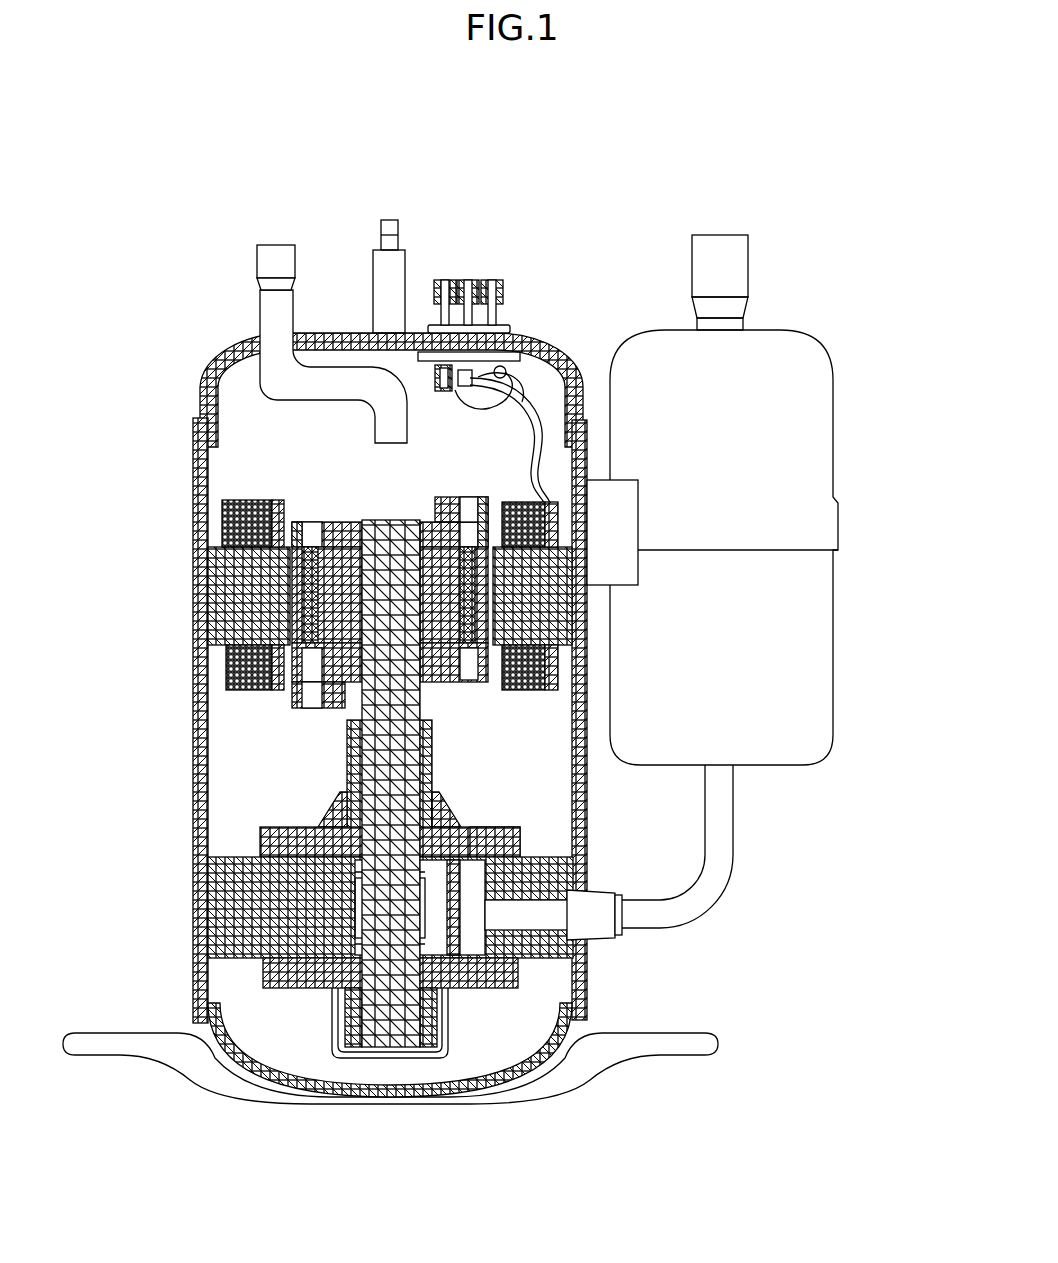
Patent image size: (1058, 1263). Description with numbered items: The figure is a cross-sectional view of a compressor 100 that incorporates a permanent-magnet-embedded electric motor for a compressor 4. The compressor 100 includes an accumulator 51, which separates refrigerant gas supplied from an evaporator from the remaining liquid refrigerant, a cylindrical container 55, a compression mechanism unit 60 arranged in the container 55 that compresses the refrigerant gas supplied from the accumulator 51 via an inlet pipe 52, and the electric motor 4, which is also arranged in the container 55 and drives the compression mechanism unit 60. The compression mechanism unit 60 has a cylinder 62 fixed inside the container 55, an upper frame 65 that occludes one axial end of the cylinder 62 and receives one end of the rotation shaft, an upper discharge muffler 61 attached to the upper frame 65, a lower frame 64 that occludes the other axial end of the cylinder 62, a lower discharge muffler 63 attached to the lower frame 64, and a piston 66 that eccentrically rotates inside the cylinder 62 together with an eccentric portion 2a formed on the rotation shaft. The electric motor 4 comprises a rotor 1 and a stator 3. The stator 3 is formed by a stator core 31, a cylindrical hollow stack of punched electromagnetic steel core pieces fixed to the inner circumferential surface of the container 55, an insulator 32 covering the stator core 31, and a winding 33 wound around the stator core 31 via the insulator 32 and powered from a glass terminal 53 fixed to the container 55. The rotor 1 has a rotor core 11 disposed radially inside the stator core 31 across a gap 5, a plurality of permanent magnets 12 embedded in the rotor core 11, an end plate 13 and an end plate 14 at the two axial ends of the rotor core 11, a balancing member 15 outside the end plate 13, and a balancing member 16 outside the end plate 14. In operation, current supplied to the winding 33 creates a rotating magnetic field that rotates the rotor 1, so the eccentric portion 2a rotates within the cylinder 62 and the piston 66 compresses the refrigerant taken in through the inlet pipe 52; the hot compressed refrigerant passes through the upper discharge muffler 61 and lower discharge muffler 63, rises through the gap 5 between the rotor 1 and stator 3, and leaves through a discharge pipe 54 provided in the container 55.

The compressor 100 is at (474, 119).
The rotor 1 is at (110, 477).
The eccentric portion 2a is at (385, 773).
The stator 3 is at (890, 612).
The permanent-magnet-embedded electric motor for a compressor 4 is at (395, 498).
The gap 5 is at (496, 546).
The rotor core 11 is at (300, 587).
The permanent magnets 12 is at (313, 620).
The end plate 13 is at (300, 530).
The end plate 14 is at (300, 658).
The balancing member 15 is at (323, 520).
The balancing member 16 is at (300, 700).
The stator core 31 is at (540, 625).
The insulator 32 is at (545, 665).
The winding 33 is at (525, 690).
The accumulator 51 is at (835, 432).
The inlet pipe 52 is at (712, 905).
The glass terminal 53 is at (470, 282).
The discharge pipe 54 is at (268, 262).
The container 55 is at (217, 358).
The compression mechanism unit 60 is at (237, 1013).
The upper discharge muffler 61 is at (320, 817).
The cylinder 62 is at (235, 890).
The lower discharge muffler 63 is at (330, 1020).
The lower frame 64 is at (263, 973).
The upper frame 65 is at (510, 845).
The piston 66 is at (350, 928).